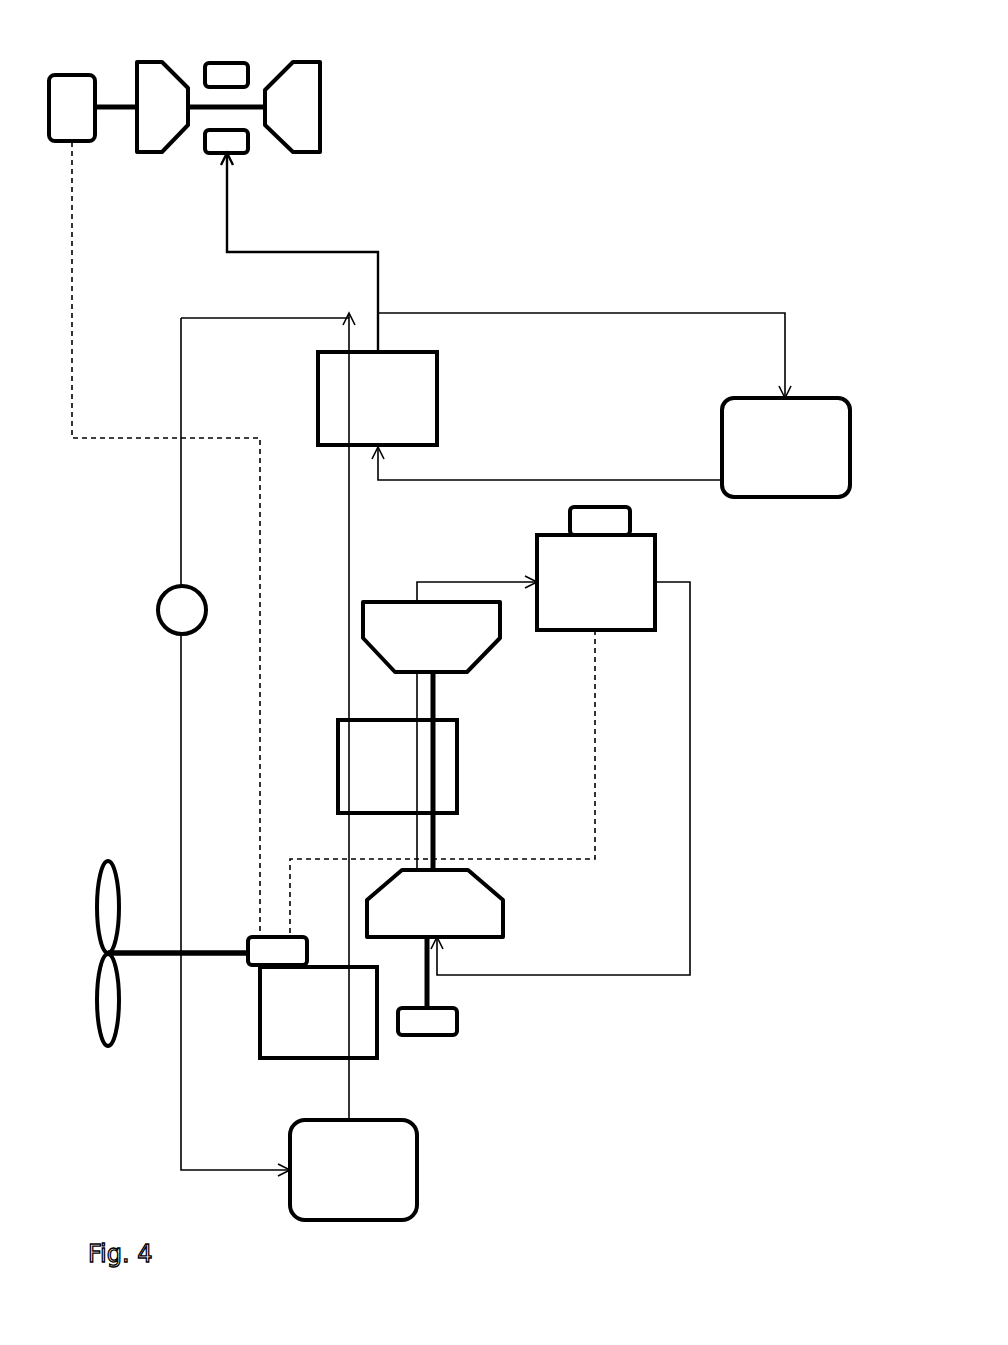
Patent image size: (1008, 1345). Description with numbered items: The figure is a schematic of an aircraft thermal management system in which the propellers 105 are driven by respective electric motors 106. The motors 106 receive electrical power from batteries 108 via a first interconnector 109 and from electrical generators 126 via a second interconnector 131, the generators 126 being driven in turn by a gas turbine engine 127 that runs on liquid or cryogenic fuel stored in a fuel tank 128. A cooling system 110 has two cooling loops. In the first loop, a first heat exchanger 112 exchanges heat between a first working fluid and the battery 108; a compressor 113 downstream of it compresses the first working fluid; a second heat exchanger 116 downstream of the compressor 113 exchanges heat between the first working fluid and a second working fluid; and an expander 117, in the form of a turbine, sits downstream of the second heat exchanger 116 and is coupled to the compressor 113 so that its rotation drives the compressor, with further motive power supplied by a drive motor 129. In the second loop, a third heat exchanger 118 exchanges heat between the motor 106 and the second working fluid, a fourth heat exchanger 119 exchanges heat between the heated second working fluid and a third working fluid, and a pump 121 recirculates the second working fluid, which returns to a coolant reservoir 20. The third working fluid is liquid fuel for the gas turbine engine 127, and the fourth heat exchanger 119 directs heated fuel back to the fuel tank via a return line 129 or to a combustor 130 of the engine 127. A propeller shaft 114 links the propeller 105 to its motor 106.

The coolant reservoir 20 is at (417, 1170).
The propellers 105 is at (108, 860).
The electric motors 106 is at (278, 937).
The batteries 108 is at (630, 522).
The first interconnector 109 is at (595, 757).
The cooling system 110 is at (743, 825).
The first heat exchanger 112 is at (655, 553).
The compressor 113 is at (472, 873).
The propeller shaft 114 is at (227, 948).
The second heat exchanger 116 is at (457, 720).
The expander 117 is at (363, 632).
The third heat exchanger 118 is at (377, 1055).
The fourth heat exchanger 119 is at (437, 352).
The pump 121 is at (167, 587).
The electrical generators 126 is at (72, 142).
The gas turbine engine 127 is at (320, 62).
The fuel tank 128 is at (820, 398).
The return line 129 is at (653, 313).
The combustor 130 is at (229, 156).
The second interconnector 131 is at (107, 445).